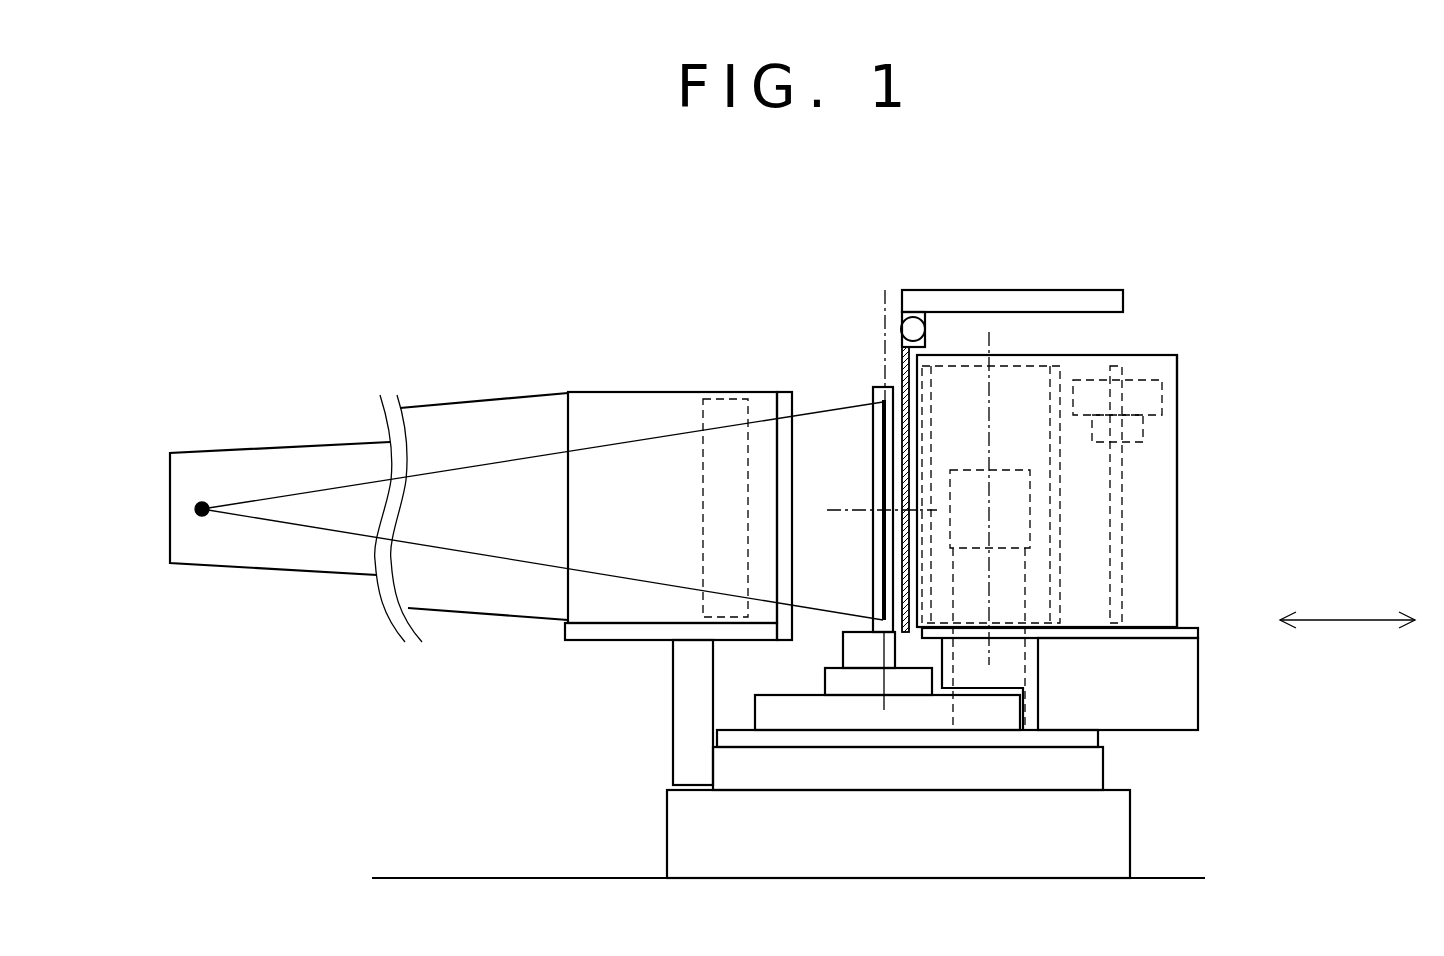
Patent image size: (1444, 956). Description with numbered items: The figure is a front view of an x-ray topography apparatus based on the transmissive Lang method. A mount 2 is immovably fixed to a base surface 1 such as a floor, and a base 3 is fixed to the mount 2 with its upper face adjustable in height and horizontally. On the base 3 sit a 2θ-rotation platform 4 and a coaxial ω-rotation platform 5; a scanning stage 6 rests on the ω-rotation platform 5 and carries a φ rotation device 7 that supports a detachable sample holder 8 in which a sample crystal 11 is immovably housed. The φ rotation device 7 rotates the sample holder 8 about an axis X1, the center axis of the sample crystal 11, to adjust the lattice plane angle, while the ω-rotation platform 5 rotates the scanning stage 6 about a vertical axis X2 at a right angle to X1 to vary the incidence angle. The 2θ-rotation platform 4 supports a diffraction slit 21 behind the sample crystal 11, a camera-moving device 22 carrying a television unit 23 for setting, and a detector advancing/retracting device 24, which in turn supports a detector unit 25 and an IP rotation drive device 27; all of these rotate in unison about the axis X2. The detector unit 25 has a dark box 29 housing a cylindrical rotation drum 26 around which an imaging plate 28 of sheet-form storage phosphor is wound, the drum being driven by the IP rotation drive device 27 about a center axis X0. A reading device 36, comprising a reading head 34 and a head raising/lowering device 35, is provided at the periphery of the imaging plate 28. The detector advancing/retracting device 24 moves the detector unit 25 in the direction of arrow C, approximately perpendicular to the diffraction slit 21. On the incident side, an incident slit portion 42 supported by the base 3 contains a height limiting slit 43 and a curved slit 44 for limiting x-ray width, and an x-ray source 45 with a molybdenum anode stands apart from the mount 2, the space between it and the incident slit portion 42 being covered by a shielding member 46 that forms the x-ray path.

The base surface 1 is at (442, 878).
The mount 2 is at (1118, 835).
The base 3 is at (1092, 770).
The 2θ-rotation platform 4 is at (718, 735).
The ω-rotation platform 5 is at (765, 712).
The scanning stage 6 is at (838, 683).
The φ rotation device 7 is at (853, 648).
The sample holder 8 is at (878, 387).
The sample crystal 11 is at (880, 452).
The diffraction slit 21 is at (900, 573).
The camera-moving device 22 is at (1012, 593).
The television unit for setting 23 is at (960, 445).
The detector advancing/retracting device 24 is at (1187, 690).
The detector unit 25 is at (1173, 313).
The rotation drum 26 is at (1027, 373).
The IP rotation drive device 27 is at (940, 653).
The imaging plate 28 is at (1062, 487).
The dark box 29 is at (1165, 572).
The reading head 34 is at (1152, 397).
The head raising/lowering device 35 is at (1148, 425).
The reading device 36 is at (1232, 410).
The incident slit portion 42 is at (551, 313).
The height limiting slit 43 is at (715, 552).
The curved slit 44 is at (785, 397).
The x-ray source 45 is at (202, 500).
The shielding member 46 is at (290, 437).
The center axis X0 is at (989, 332).
The axis of intra-planar rotation X1 is at (872, 492).
The axis of ω-rotation and 2θ-rotation X2 is at (899, 283).
The arrow C is at (1346, 601).